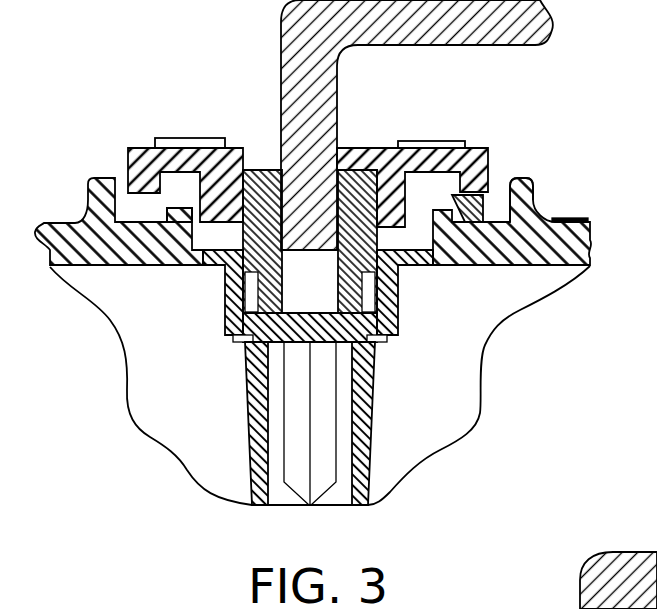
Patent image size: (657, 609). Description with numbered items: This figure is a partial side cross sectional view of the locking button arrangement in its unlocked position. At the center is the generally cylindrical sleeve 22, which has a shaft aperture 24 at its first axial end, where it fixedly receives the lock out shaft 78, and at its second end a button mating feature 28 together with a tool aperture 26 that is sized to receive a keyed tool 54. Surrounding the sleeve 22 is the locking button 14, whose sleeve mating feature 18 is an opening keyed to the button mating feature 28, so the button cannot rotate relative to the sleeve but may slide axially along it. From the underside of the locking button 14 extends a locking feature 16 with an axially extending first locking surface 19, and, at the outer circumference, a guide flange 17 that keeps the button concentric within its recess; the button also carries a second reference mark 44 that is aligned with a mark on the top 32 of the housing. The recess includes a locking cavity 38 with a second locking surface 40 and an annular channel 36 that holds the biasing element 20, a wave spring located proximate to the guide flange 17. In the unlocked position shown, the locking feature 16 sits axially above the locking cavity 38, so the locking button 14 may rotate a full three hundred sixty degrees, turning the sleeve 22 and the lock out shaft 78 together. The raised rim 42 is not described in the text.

The tool 54 is at (281, 47).
The locking feature 16 is at (198, 205).
The biasing element 20 is at (480, 264).
The first locking surface 19 is at (175, 225).
The guide flange 17 is at (124, 192).
The second reference mark 44 is at (177, 138).
The sleeve mating feature 18 is at (398, 148).
The locking button 14 is at (442, 141).
The annular channel 36 is at (492, 220).
The raised rim 42 is at (533, 193).
The top 32 is at (573, 218).
The button mating feature 28 is at (262, 170).
The tool aperture 26 is at (345, 170).
The second locking surface 40 is at (207, 265).
The locking cavity 38 is at (410, 266).
The sleeve 22 is at (245, 403).
The lock out shaft 78 is at (308, 468).
The shaft aperture 24 is at (338, 497).